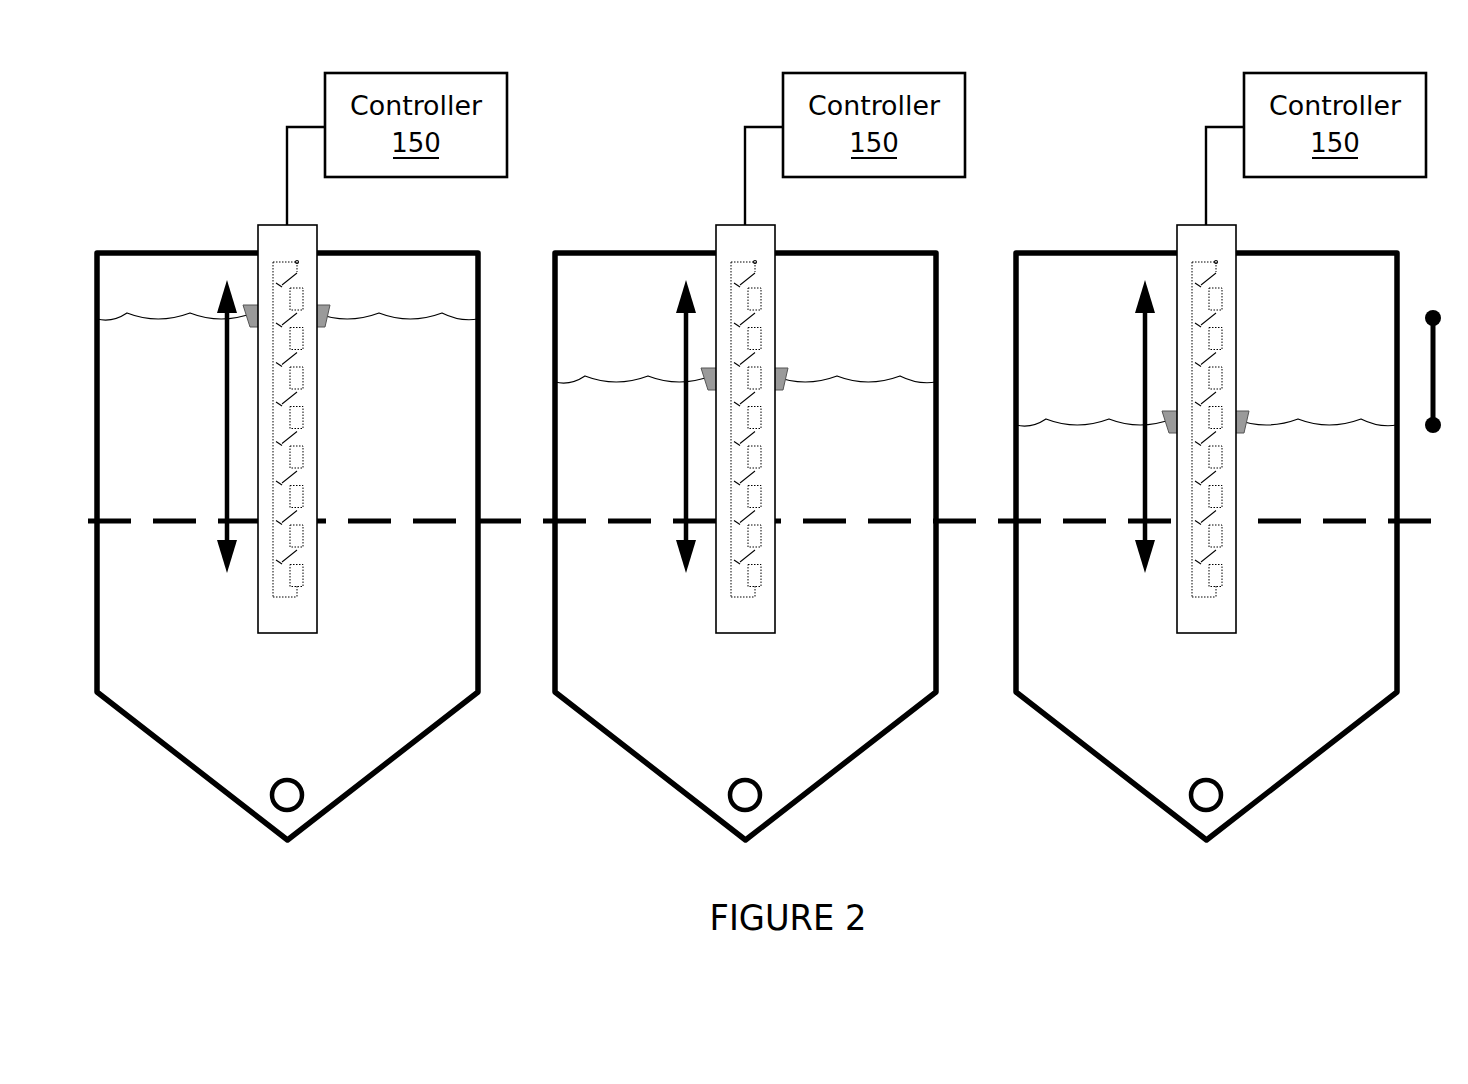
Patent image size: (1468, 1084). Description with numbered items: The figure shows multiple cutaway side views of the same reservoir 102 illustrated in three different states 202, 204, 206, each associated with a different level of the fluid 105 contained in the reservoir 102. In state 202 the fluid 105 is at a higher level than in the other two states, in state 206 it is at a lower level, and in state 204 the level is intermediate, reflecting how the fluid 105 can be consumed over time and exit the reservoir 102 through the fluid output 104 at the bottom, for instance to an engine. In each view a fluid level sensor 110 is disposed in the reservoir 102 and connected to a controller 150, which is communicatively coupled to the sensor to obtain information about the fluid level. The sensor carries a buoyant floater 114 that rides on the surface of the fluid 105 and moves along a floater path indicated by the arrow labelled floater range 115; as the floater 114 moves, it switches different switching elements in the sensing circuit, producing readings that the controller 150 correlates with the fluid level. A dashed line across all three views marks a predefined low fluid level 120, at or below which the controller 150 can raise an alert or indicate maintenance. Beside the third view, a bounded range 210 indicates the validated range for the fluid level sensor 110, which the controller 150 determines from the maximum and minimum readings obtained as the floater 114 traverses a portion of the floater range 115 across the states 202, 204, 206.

The reservoir 102 is at (131, 253).
The fluid output 104 is at (680, 805).
The fluid 105 is at (747, 725).
The fluid level sensor 110 is at (709, 380).
The floater 114 is at (801, 317).
The floater range 115 is at (647, 426).
The low fluid level 120 is at (503, 523).
The controller 150 is at (875, 125).
The state 202 is at (471, 738).
The state 204 is at (903, 738).
The state 206 is at (1390, 738).
The validated range 210 is at (1433, 318).